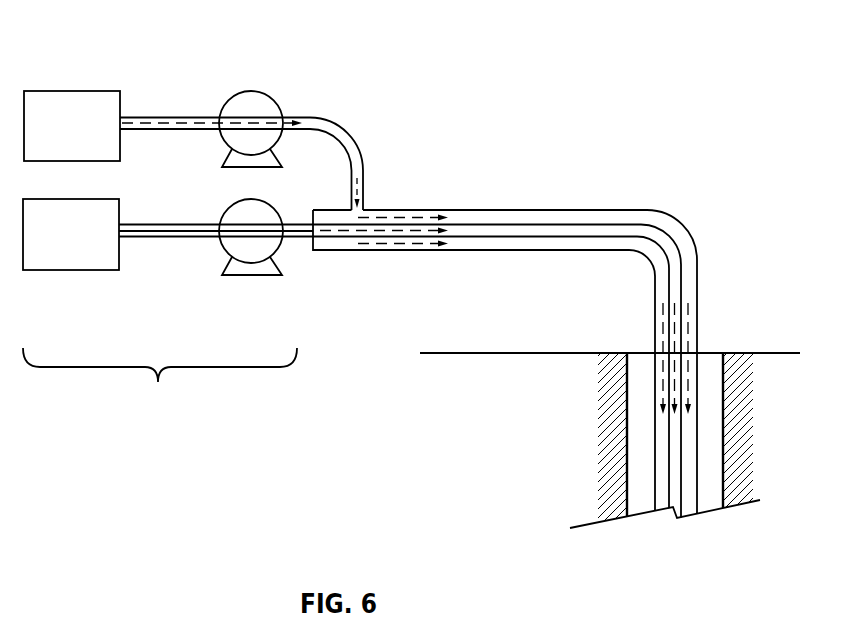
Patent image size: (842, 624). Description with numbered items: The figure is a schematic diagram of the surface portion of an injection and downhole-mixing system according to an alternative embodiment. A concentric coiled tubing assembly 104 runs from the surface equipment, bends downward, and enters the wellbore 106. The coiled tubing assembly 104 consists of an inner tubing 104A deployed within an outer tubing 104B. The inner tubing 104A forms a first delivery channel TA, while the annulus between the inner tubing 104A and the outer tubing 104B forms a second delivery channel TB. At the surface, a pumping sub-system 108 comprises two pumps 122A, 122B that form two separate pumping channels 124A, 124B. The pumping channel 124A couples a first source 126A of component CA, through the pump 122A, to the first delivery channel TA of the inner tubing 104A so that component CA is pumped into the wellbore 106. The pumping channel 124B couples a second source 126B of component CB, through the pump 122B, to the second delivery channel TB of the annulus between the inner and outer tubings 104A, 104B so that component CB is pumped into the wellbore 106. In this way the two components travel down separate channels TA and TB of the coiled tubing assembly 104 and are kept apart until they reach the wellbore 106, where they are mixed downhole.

The coiled tubing assembly 104 is at (546, 318).
The inner tubing 104A is at (496, 225).
The outer tubing 104B is at (579, 209).
The wellbore 106 is at (709, 367).
The pumping sub-system 108 is at (160, 381).
The pump 122A is at (226, 206).
The pump 122B is at (271, 91).
The pumping channel 124A is at (237, 238).
The pumping channel 124B is at (243, 118).
The first source 126A is at (63, 271).
The second source 126B is at (68, 91).
The first delivery channel TA is at (555, 230).
The second delivery channel TB is at (680, 243).